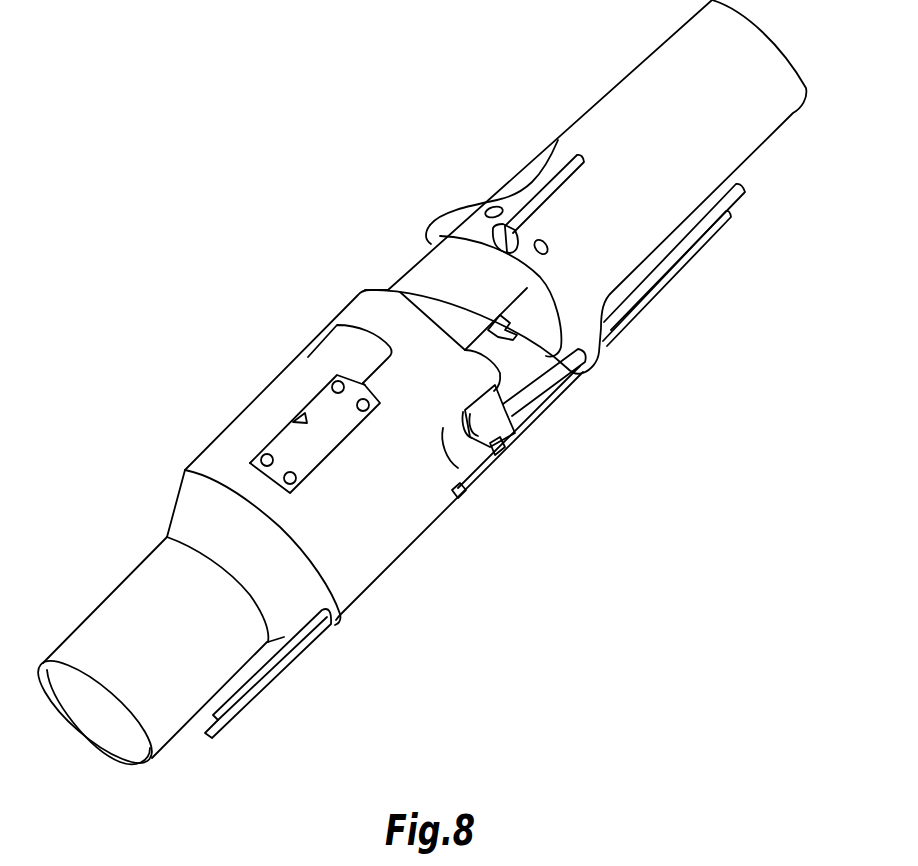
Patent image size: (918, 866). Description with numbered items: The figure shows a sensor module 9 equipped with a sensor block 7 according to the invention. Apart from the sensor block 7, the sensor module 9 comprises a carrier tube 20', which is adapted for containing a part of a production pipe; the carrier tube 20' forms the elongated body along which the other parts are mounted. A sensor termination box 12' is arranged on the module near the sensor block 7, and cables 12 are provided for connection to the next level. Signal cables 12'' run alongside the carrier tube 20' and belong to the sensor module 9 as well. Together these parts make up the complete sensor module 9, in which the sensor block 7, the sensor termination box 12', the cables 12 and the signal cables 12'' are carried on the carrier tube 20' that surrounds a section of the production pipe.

The sensor module 9 is at (386, 137).
The sensor block 7 is at (290, 441).
The cables 12 is at (538, 185).
The sensor termination box 12' is at (473, 278).
The signal cables 12'' is at (486, 461).
The carrier tube 20' is at (145, 657).